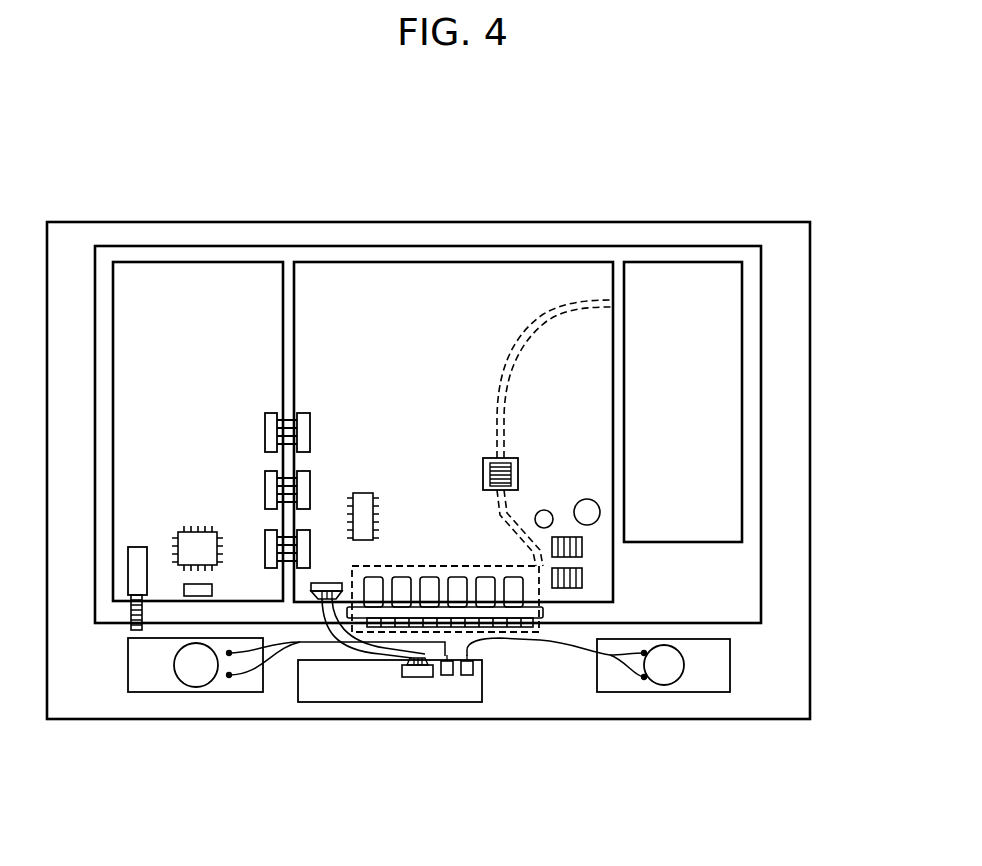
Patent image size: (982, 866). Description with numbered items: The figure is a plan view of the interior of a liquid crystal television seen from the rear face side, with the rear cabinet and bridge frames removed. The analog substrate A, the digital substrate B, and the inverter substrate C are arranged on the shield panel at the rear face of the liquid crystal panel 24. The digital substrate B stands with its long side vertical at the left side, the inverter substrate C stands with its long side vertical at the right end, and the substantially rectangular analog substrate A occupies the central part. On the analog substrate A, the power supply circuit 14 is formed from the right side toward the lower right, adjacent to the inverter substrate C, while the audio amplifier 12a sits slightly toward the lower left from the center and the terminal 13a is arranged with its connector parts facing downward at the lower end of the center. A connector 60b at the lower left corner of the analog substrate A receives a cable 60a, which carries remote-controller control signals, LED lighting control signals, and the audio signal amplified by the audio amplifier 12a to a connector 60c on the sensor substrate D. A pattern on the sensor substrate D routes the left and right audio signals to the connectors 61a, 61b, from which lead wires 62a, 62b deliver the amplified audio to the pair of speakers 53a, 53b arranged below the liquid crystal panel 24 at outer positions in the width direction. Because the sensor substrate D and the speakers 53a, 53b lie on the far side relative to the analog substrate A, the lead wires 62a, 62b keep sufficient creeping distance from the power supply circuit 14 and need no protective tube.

The liquid crystal panel 24 is at (762, 372).
The power supply circuit 14 is at (570, 478).
The audio amplifier 12a is at (360, 493).
The terminal 13a is at (539, 597).
The speaker 53a is at (730, 668).
The speaker 53b is at (150, 692).
The cable 60a is at (358, 643).
The connector 60b is at (325, 583).
The connector 60c is at (413, 677).
The connector 61a is at (468, 676).
The connector 61b is at (447, 676).
The lead wire 62a is at (557, 645).
The lead wire 62b is at (313, 643).
The analog substrate A is at (462, 262).
The digital substrate B is at (228, 261).
The inverter substrate C is at (683, 262).
The sensor substrate D is at (407, 703).